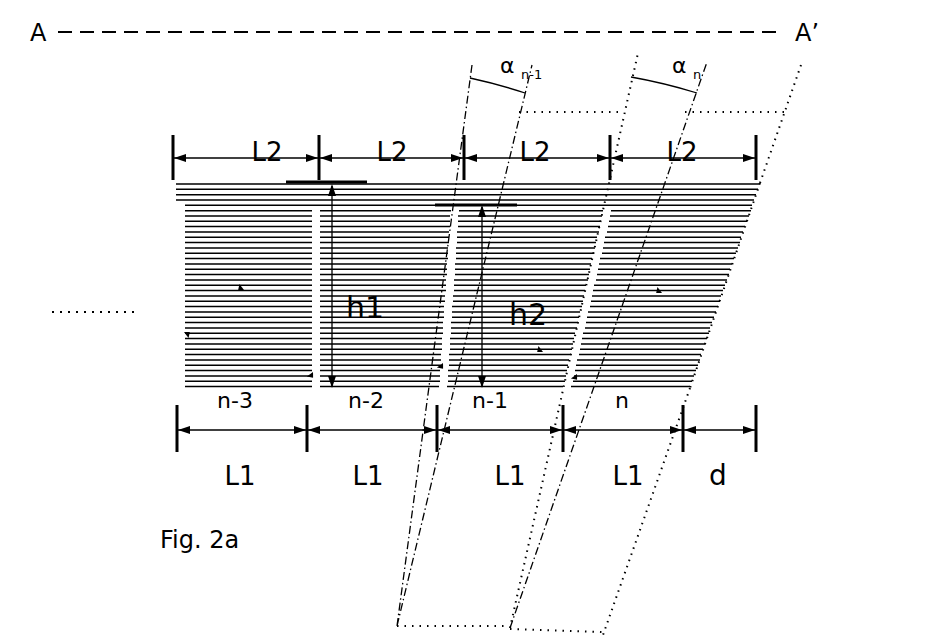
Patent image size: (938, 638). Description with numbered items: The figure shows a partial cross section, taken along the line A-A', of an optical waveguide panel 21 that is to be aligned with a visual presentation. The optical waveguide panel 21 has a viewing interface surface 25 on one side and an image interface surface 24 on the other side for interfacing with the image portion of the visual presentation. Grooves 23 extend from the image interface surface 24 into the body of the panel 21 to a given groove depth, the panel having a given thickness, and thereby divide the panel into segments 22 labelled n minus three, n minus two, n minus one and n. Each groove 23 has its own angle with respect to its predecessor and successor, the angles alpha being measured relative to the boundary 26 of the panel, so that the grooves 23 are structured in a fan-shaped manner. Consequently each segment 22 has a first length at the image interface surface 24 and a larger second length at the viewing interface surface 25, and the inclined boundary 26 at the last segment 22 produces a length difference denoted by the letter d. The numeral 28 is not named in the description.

The optical waveguide panel 21 is at (160, 230).
The segments 22 is at (187, 285).
The grooves 23 is at (192, 388).
The image interface surface 24 is at (173, 418).
The viewing interface surface 25 is at (232, 178).
The boundary 26 is at (712, 322).
The outer boundary line 28 is at (783, 195).